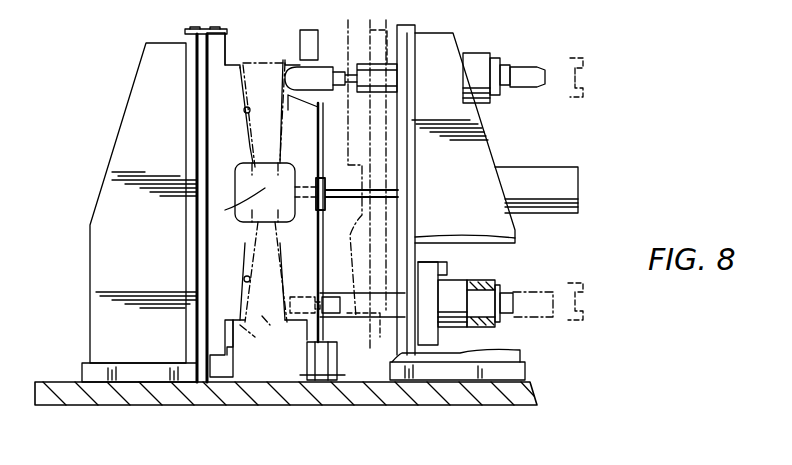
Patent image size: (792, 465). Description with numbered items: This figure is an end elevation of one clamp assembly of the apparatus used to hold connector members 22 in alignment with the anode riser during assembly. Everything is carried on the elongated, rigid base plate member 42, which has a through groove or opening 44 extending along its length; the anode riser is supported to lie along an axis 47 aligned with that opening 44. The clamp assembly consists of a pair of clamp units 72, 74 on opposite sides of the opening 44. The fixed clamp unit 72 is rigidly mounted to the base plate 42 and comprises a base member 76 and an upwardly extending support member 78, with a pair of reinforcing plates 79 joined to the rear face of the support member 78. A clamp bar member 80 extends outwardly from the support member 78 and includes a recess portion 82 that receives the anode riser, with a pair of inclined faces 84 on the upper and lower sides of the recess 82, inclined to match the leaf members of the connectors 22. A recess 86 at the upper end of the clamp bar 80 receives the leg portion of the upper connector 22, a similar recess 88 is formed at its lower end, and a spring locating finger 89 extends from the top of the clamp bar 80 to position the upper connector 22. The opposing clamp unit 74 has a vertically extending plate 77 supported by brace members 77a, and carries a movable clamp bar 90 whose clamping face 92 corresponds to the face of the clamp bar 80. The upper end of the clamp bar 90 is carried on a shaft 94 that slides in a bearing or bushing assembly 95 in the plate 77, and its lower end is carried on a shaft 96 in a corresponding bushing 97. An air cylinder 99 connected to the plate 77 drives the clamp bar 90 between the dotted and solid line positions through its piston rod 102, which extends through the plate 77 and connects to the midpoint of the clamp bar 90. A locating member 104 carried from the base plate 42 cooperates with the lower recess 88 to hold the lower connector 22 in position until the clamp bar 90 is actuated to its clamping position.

The connector member 22 is at (257, 67).
The base plate member 42 is at (530, 378).
The through groove or opening 44 is at (280, 385).
The axis 47 is at (225, 210).
The clamp unit 72 is at (77, 248).
The clamp unit 74 is at (530, 142).
The base member 76 is at (82, 373).
The vertically extending plate 77 is at (405, 262).
The brace member 77a is at (518, 235).
The support member 78 is at (202, 97).
The reinforcing plate 79 is at (110, 212).
The clamp bar member 80 is at (223, 145).
The recess portion 82 is at (200, 199).
The inclined face 84 is at (247, 117).
The recess 86 is at (220, 45).
The recess 88 is at (230, 347).
The spring locating finger 89 is at (240, 33).
The movable clamp bar 90 is at (308, 133).
The clamping face 92 is at (268, 156).
The shaft 94 is at (377, 62).
The bearing or bushing assembly 95 is at (475, 52).
The shaft 96 is at (342, 283).
The bushing 97 is at (478, 282).
The air cylinder 99 is at (578, 172).
The piston rod 102 is at (337, 215).
The locating member 104 is at (313, 377).